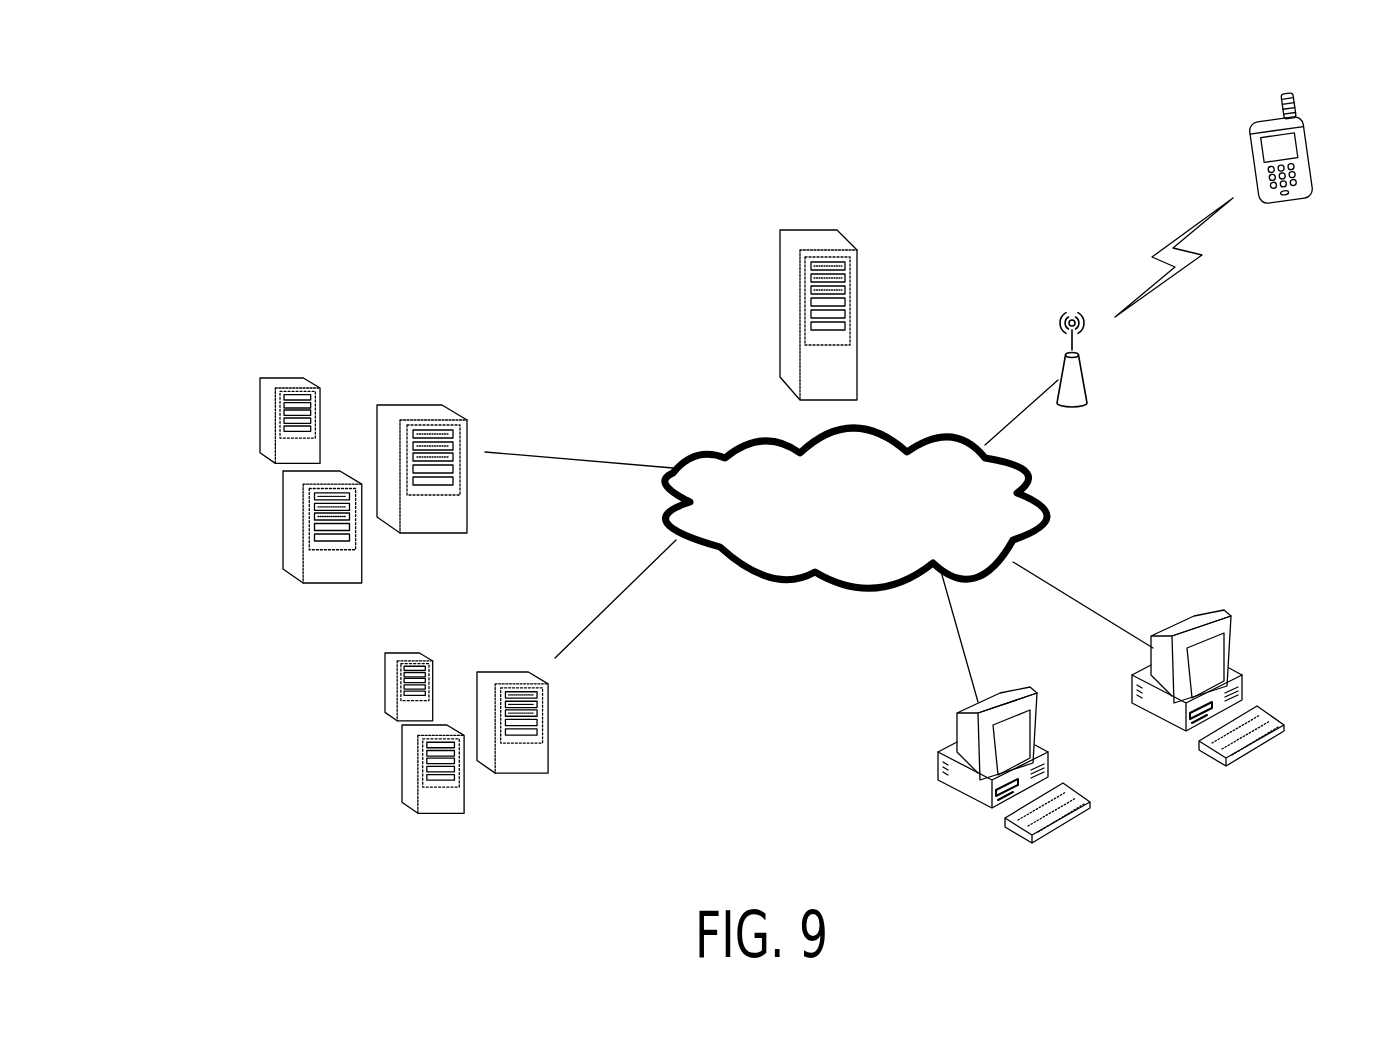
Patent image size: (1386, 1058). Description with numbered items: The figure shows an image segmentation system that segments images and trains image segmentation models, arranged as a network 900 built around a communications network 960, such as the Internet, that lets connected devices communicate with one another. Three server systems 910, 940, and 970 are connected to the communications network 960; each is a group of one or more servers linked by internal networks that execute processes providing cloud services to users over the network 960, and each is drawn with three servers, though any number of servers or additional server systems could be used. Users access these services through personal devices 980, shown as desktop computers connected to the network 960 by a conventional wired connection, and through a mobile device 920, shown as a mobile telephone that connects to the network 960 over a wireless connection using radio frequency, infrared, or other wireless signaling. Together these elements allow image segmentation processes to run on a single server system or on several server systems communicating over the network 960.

The network 900 is at (684, 250).
The server system 910 is at (817, 240).
The mobile device 920 is at (1265, 120).
The server system 940 is at (462, 397).
The communications network 960 is at (817, 570).
The server system 970 is at (293, 715).
The personal devices 980 is at (1085, 810).